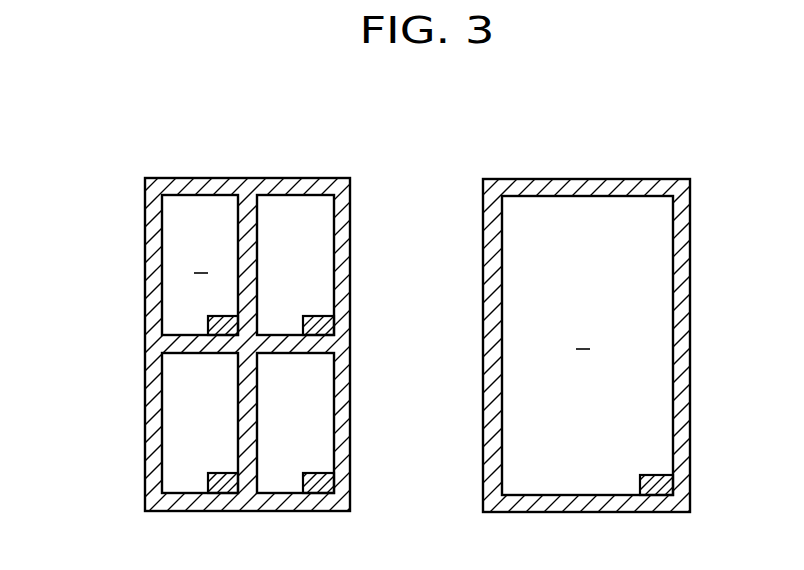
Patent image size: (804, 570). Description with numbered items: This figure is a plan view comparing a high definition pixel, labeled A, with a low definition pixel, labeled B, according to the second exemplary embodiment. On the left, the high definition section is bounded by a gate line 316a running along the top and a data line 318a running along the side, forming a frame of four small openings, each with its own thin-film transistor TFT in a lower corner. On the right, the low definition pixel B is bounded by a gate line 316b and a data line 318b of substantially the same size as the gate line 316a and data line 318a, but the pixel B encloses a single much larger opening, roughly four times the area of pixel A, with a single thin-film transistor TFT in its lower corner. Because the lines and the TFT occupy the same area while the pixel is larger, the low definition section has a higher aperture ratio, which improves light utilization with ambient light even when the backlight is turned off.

The gate line 316a is at (237, 190).
The data line 318a is at (155, 245).
The gate line 316b is at (577, 190).
The data line 318b is at (494, 246).
The thin-film transistor TFT is at (322, 484).